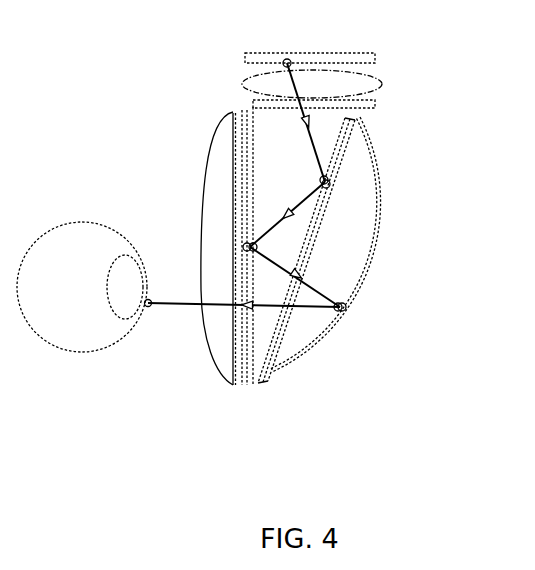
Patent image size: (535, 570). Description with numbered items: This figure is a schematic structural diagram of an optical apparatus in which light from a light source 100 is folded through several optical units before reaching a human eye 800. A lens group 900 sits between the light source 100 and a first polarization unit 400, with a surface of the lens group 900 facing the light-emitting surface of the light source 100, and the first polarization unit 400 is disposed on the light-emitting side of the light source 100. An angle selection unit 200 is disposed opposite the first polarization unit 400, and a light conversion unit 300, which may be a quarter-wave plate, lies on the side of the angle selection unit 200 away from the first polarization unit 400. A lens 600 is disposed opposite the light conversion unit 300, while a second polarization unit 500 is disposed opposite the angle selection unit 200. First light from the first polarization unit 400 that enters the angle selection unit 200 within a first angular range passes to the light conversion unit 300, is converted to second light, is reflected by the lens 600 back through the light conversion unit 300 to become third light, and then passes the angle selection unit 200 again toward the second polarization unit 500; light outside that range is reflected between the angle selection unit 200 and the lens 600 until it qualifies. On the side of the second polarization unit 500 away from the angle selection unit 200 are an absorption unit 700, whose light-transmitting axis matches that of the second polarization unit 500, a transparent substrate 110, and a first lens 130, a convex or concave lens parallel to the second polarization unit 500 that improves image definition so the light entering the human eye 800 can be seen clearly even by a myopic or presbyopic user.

The light source 100 is at (363, 58).
The lens group 900 is at (377, 83).
The first polarization unit 400 is at (375, 105).
The light conversion unit 300 is at (348, 150).
The angle selection unit 200 is at (313, 216).
The lens 600 is at (382, 194).
The first lens 130 is at (217, 343).
The transparent substrate 110 is at (237, 388).
The absorption unit 700 is at (247, 386).
The second polarization unit 500 is at (255, 386).
The human eye 800 is at (108, 240).